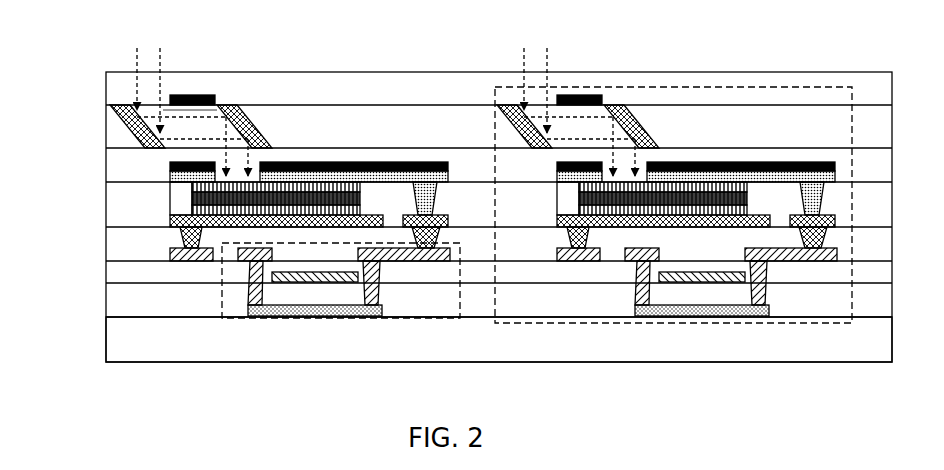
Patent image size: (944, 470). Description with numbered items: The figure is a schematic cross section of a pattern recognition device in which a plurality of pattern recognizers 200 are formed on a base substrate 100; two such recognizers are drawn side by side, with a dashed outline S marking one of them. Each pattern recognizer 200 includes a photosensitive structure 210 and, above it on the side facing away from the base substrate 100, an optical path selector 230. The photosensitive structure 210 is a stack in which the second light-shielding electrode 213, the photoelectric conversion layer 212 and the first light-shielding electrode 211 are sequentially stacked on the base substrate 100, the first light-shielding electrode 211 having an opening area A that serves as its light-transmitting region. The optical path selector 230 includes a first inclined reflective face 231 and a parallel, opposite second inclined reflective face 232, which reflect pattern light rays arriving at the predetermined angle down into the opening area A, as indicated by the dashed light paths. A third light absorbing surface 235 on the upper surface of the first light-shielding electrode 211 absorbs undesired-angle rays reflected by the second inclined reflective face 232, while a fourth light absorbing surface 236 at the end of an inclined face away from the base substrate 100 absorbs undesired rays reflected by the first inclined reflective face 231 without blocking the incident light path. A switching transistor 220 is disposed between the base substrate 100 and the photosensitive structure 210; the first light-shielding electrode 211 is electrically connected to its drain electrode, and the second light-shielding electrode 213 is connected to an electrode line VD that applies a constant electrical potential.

The base substrate 100 is at (135, 338).
The pattern recognizer 200 is at (655, 87).
The photosensitive structure 210 is at (230, 205).
The first light-shielding electrode 211 is at (170, 176).
The photoelectric conversion layer 212 is at (171, 198).
The second light-shielding electrode 213 is at (170, 221).
The switching transistor 220 is at (367, 318).
The optical path selector 230 is at (231, 112).
The first inclined reflective face 231 is at (156, 133).
The second inclined reflective face 232 is at (135, 110).
The third light absorbing surface 235 is at (170, 167).
The fourth light absorbing surface 236 is at (170, 97).
The opening area A is at (238, 177).
The sub-pixel region S is at (830, 72).
The electrode line VD is at (180, 261).